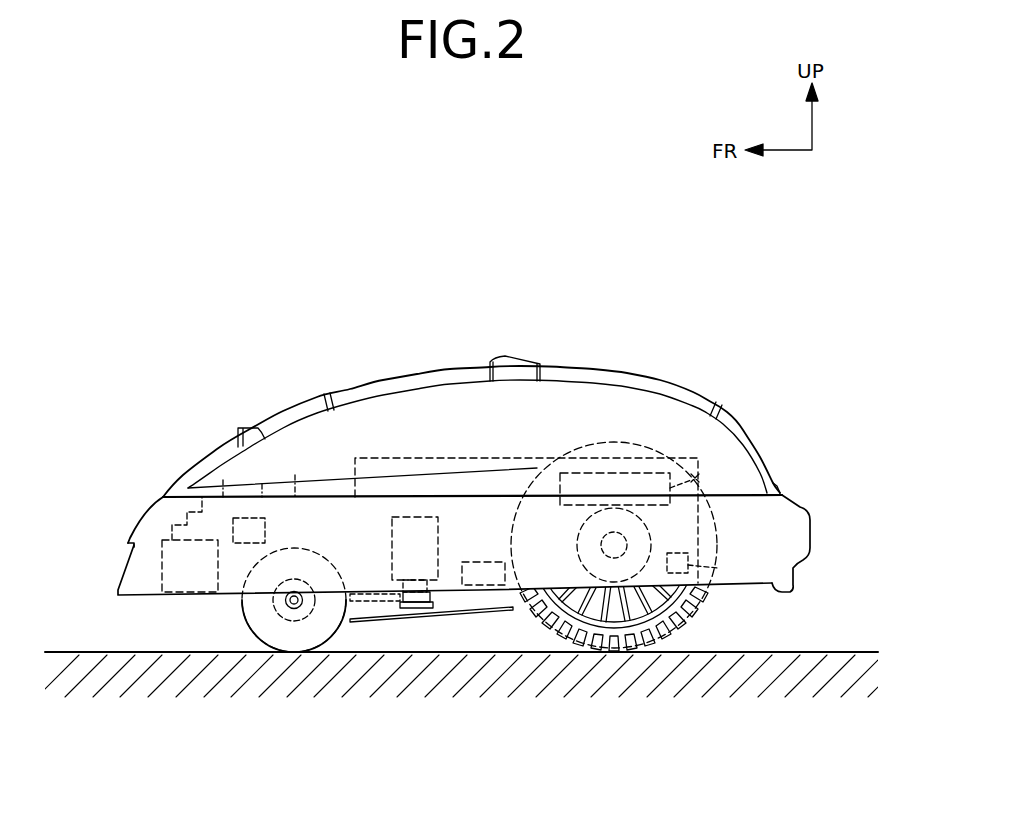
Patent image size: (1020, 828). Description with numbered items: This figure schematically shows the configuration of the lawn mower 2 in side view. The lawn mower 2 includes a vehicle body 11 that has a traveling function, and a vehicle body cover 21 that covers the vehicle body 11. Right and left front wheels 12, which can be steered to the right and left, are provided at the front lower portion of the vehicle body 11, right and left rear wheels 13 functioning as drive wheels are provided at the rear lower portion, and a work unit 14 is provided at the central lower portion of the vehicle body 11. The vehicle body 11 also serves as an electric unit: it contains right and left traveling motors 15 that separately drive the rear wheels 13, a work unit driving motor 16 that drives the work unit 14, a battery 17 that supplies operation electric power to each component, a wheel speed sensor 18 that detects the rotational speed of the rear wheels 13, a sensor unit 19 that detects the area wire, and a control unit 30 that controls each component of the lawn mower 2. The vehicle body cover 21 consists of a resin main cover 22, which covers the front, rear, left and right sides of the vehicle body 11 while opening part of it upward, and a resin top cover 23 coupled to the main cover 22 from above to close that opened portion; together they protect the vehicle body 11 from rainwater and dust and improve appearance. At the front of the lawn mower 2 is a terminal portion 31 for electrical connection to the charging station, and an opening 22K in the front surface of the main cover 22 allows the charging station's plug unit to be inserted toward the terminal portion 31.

The lawn mower 2 is at (180, 356).
The vehicle body 11 is at (410, 452).
The front wheels 12 is at (317, 633).
The rear wheels 13 is at (652, 627).
The work unit 14 is at (473, 630).
The traveling motors 15 is at (652, 535).
The work unit driving motor 16 is at (390, 542).
The battery 17 is at (470, 561).
The wheel speed sensor 18 is at (705, 480).
The sensor unit 19 is at (265, 527).
The vehicle body cover 21 is at (176, 481).
The main cover 22 is at (141, 512).
The opening 22K is at (127, 551).
The top cover 23 is at (168, 488).
The control unit 30 is at (699, 472).
The terminal portion 31 is at (196, 597).